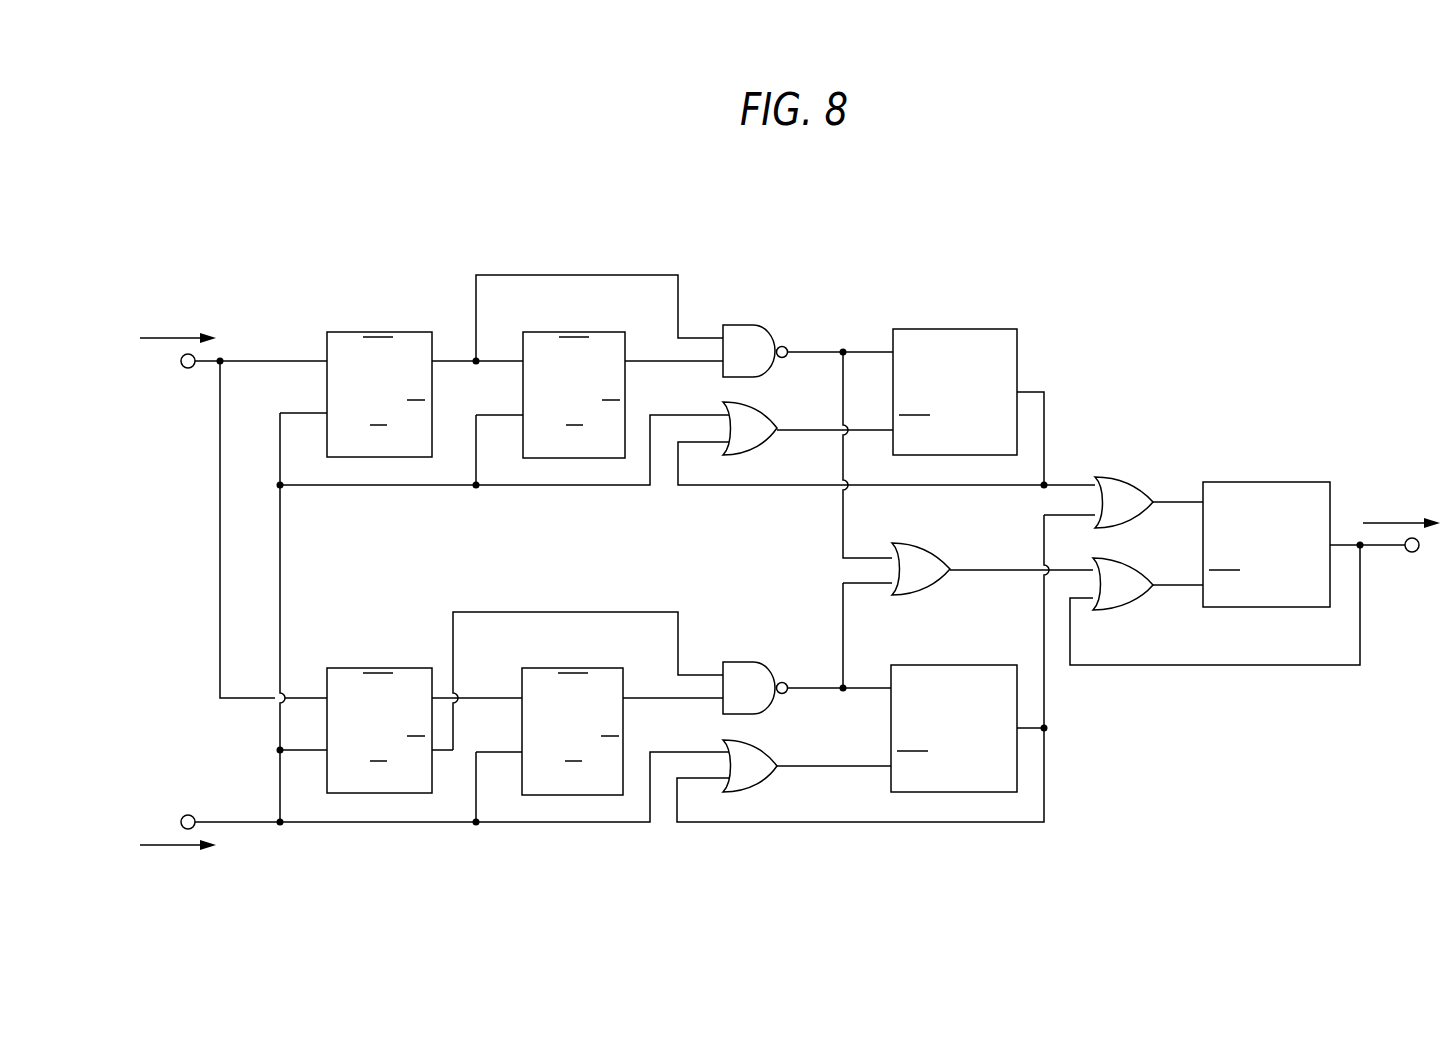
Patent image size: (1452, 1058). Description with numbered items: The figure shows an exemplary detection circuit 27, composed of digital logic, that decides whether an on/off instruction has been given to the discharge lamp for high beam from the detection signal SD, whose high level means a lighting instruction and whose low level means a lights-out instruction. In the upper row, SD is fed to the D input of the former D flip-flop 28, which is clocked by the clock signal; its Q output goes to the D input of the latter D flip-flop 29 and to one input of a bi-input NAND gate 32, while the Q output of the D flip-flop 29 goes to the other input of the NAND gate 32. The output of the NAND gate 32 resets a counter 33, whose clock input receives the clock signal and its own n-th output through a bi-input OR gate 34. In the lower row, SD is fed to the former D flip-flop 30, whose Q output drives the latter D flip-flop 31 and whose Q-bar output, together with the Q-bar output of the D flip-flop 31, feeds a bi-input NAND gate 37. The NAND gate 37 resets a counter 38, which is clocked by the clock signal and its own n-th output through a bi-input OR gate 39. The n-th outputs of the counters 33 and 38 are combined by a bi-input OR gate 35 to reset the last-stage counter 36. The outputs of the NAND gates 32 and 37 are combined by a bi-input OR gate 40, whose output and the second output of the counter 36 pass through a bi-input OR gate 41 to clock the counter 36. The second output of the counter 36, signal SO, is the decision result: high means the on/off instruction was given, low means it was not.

The detection circuit 27 is at (1121, 345).
The D flip-flop 28 is at (378, 332).
The D flip-flop 29 is at (574, 332).
The D flip-flop 30 is at (378, 668).
The D flip-flop 31 is at (573, 668).
The bi-input NAND gate 32 is at (740, 325).
The counter 33 is at (945, 329).
The bi-input OR gate 34 is at (778, 412).
The bi-input OR gate 35 is at (1148, 487).
The counter 36 is at (1255, 482).
The bi-input NAND gate 37 is at (740, 662).
The counter 38 is at (943, 665).
The bi-input OR gate 39 is at (779, 750).
The bi-input OR gate 40 is at (945, 553).
The bi-input OR gate 41 is at (1148, 568).